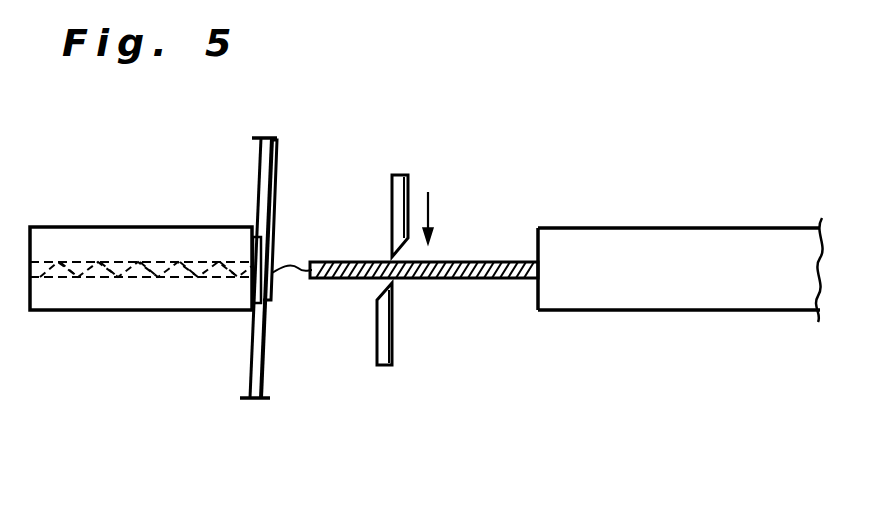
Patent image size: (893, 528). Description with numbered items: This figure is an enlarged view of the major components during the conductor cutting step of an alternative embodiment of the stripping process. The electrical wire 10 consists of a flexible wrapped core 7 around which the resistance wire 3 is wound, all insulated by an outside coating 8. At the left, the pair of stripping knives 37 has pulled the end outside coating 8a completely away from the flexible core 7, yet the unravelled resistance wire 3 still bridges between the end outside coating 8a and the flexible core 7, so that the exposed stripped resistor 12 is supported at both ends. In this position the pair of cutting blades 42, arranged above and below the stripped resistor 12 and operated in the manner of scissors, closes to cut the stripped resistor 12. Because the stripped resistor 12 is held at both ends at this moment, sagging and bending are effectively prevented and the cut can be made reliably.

The end outside coating 8a is at (115, 310).
The stripping knives 37 is at (273, 168).
The resistance wire 3 is at (290, 270).
The flexible wrapped core 7 is at (345, 262).
The cutting blades 42 is at (407, 185).
The stripped resistor 12 is at (503, 282).
The outside coating 8 is at (585, 238).
The electrical wire 10 is at (678, 313).